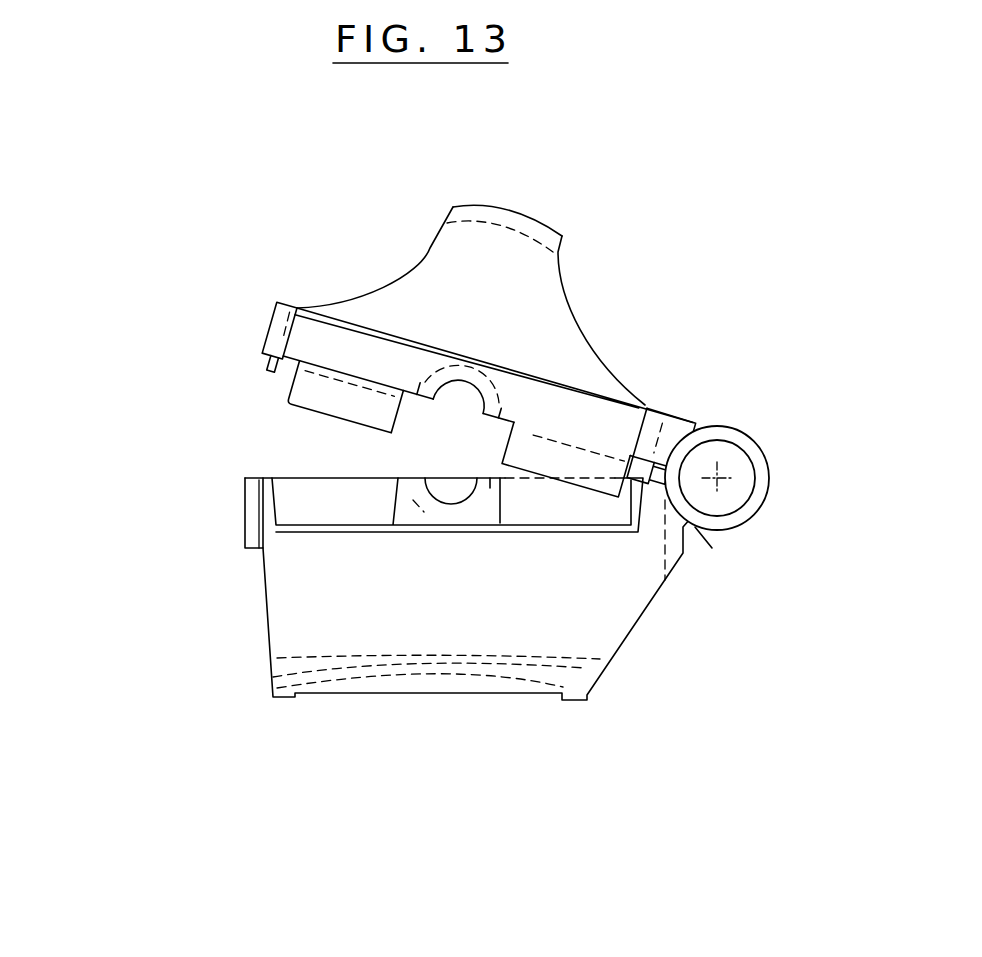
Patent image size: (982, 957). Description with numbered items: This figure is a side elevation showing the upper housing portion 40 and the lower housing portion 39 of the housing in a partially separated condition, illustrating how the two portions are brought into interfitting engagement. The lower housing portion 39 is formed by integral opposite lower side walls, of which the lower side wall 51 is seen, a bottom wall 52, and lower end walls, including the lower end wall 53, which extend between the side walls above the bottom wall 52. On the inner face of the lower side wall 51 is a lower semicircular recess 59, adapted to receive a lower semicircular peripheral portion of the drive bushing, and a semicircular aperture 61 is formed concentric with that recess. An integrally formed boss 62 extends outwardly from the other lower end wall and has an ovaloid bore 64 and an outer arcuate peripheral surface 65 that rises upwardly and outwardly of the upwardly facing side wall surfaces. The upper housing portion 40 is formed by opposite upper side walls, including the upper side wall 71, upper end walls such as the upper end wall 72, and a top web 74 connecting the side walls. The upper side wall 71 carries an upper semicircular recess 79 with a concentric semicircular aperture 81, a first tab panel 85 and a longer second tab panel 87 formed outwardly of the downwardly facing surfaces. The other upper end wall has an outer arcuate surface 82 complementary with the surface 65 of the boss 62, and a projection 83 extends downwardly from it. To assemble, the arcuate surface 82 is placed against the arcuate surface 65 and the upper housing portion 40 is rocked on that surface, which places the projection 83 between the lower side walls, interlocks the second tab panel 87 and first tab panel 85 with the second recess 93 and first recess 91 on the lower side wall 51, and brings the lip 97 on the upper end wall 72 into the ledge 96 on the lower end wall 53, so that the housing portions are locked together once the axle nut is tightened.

The lower housing portion 39 is at (419, 640).
The upper housing portion 40 is at (390, 281).
The lower side wall 51 is at (457, 614).
The bottom wall 52 is at (412, 677).
The lower end wall 53 is at (243, 517).
The lower semicircular recess 59 is at (478, 517).
The semicircular aperture 61 is at (443, 500).
The boss 62 is at (770, 462).
The ovaloid bore 64 is at (727, 487).
The outer arcuate peripheral surface 65 is at (700, 436).
The upper side wall 71 is at (455, 296).
The upper end wall 72 is at (265, 328).
The top web 74 is at (512, 212).
The upper semicircular recess 79 is at (492, 384).
The semicircular aperture 81 is at (432, 385).
The outer arcuate surface 82 is at (682, 425).
The projection 83 is at (718, 553).
The first tab panel 85 is at (362, 414).
The second tab panel 87 is at (503, 445).
The first recess 91 is at (362, 512).
The second recess 93 is at (543, 500).
The ledge 96 is at (245, 488).
The lip 97 is at (263, 370).